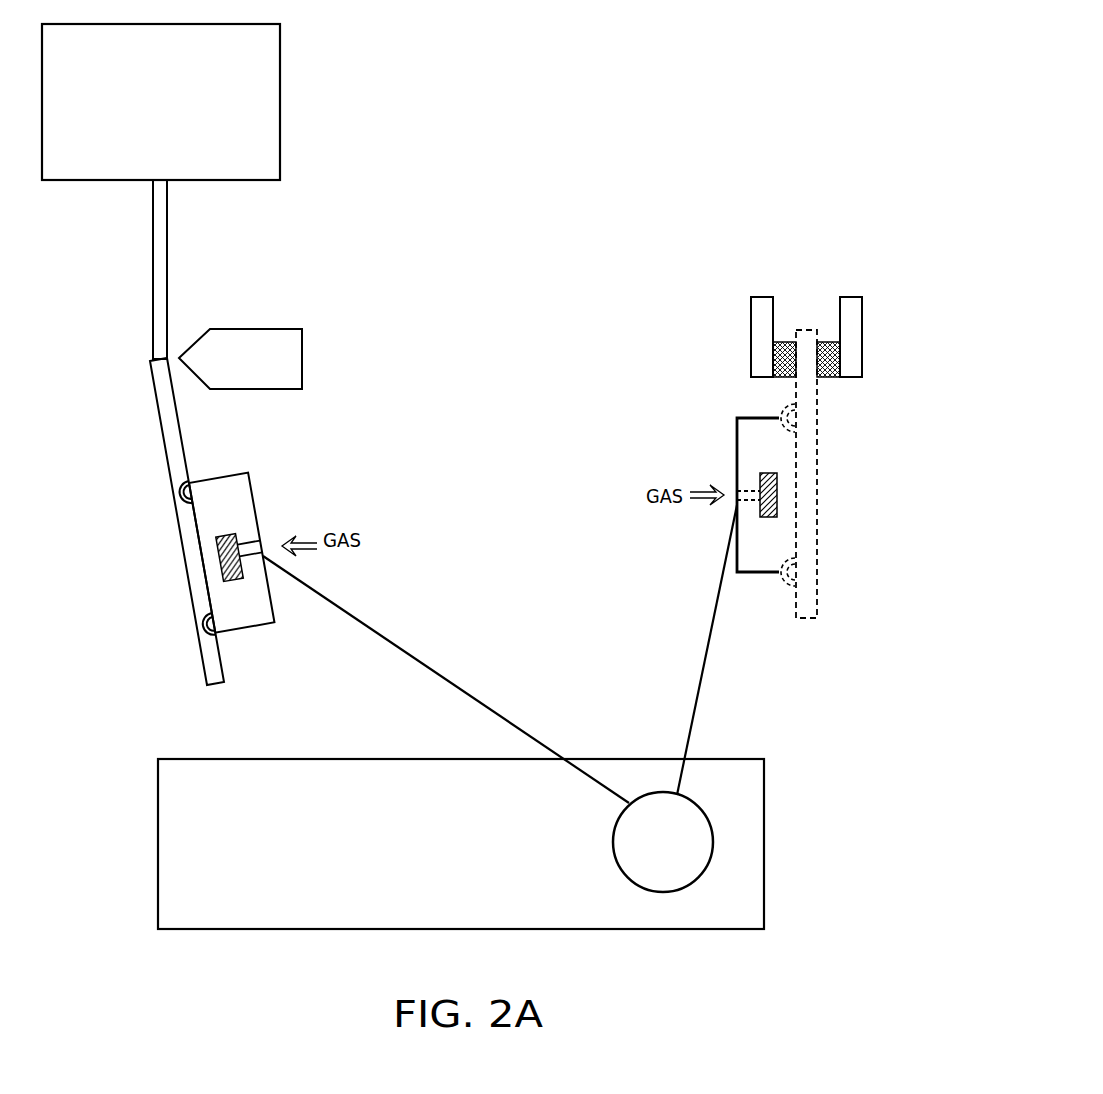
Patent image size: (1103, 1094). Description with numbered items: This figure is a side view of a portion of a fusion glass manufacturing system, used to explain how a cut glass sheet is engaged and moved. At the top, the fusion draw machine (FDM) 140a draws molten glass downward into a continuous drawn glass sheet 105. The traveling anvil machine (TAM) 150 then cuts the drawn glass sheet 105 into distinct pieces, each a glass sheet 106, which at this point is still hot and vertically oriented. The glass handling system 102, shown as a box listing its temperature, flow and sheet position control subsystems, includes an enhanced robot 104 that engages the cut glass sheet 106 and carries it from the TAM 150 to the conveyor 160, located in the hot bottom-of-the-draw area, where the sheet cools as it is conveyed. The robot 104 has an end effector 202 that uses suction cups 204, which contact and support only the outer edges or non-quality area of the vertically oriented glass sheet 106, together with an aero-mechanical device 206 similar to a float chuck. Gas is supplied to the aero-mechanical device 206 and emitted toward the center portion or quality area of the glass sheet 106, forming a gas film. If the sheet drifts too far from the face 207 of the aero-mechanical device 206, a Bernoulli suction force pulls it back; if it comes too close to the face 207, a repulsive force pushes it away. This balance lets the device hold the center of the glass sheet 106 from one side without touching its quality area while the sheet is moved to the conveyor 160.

The fusion draw machine 140a is at (280, 97).
The drawn glass sheet 105 is at (153, 268).
The traveling anvil machine 150 is at (257, 328).
The glass sheet 106 is at (187, 556).
The end effector 202 is at (253, 500).
The suction cups 204 is at (203, 475).
The aero-mechanical device 206 is at (237, 583).
The face 207 is at (216, 574).
The conveyor 160 is at (750, 326).
The glass handling system 102 is at (247, 758).
The enhanced robot 104 is at (682, 888).